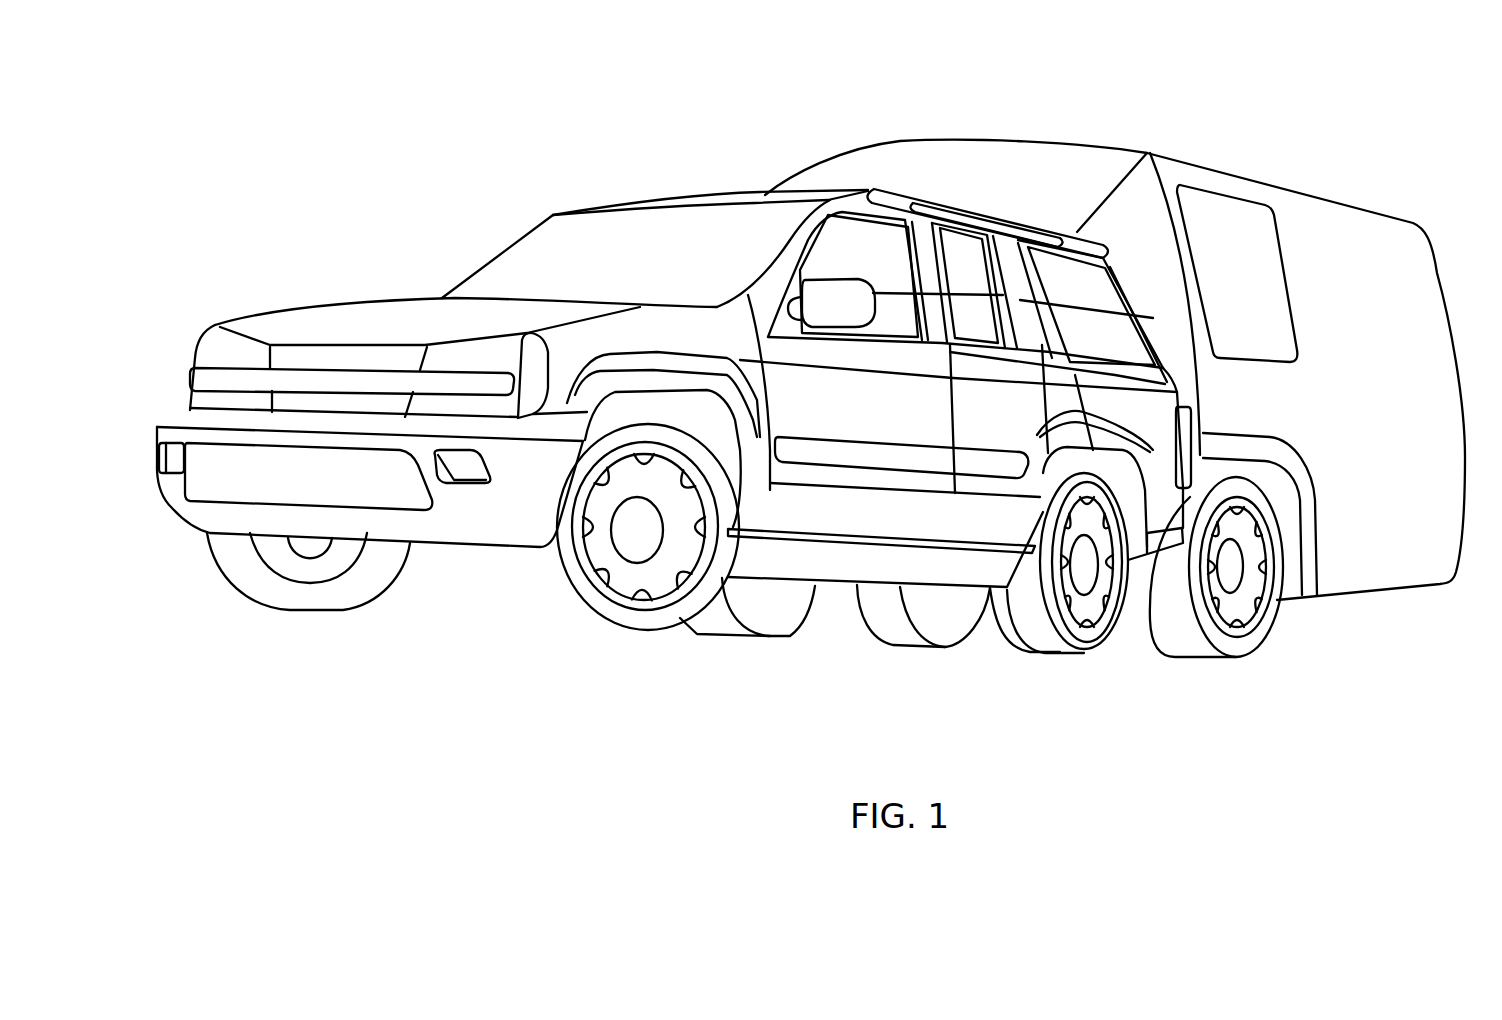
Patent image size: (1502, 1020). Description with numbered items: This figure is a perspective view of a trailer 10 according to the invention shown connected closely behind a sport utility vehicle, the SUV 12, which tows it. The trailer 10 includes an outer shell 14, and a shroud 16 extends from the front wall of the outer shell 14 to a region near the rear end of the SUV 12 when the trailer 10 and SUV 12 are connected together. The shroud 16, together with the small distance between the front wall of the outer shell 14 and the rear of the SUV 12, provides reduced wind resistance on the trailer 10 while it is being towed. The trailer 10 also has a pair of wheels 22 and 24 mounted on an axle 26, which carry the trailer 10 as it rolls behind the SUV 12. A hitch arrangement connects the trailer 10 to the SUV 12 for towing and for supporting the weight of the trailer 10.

The trailer 10 is at (1271, 420).
The SUV 12 is at (674, 422).
The outer shell 14 is at (1240, 178).
The shroud 16 is at (812, 165).
The wheel 22 is at (1231, 606).
The wheel 24 is at (893, 632).
The axle 26 is at (1232, 593).